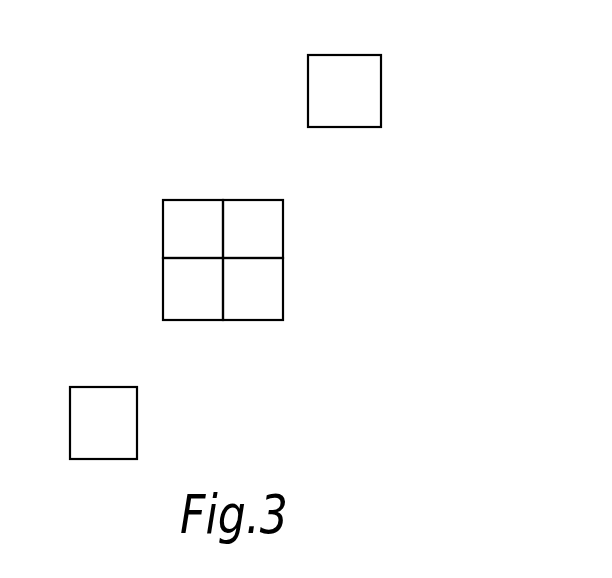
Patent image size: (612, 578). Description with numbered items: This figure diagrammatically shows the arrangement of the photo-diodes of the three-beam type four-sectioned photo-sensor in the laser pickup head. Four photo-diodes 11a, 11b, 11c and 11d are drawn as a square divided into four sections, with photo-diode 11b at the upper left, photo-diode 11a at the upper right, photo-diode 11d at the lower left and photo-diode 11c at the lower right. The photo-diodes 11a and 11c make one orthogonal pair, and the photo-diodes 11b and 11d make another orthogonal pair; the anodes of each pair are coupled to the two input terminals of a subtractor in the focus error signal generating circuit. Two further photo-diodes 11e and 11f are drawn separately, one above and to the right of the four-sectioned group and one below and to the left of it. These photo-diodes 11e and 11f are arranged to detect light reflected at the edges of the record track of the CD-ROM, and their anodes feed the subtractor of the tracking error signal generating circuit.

The photo-diode 11a is at (233, 243).
The photo-diode 11b is at (173, 243).
The photo-diode 11c is at (233, 302).
The photo-diode 11d is at (173, 302).
The photo-diode 11e is at (322, 105).
The photo-diode 11f is at (80, 435).